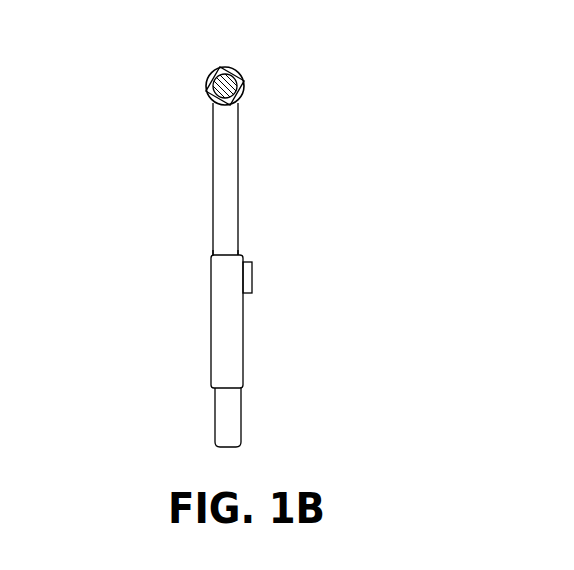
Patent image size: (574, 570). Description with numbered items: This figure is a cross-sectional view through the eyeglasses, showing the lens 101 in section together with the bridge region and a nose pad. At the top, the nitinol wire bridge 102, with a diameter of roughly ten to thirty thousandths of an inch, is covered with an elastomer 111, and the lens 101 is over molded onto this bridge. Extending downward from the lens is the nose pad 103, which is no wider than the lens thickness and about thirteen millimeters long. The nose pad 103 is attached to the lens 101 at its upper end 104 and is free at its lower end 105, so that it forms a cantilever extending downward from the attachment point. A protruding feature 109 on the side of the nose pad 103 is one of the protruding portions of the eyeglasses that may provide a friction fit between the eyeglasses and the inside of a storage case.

The lens 101 is at (230, 148).
The nitinol wire bridge 102 is at (225, 75).
The nose pad 103 is at (244, 345).
The upper end of nose pad 104 is at (229, 255).
The lower end of nose pad 105 is at (229, 390).
The protruding feature 109 is at (250, 280).
The elastomer 111 is at (242, 70).